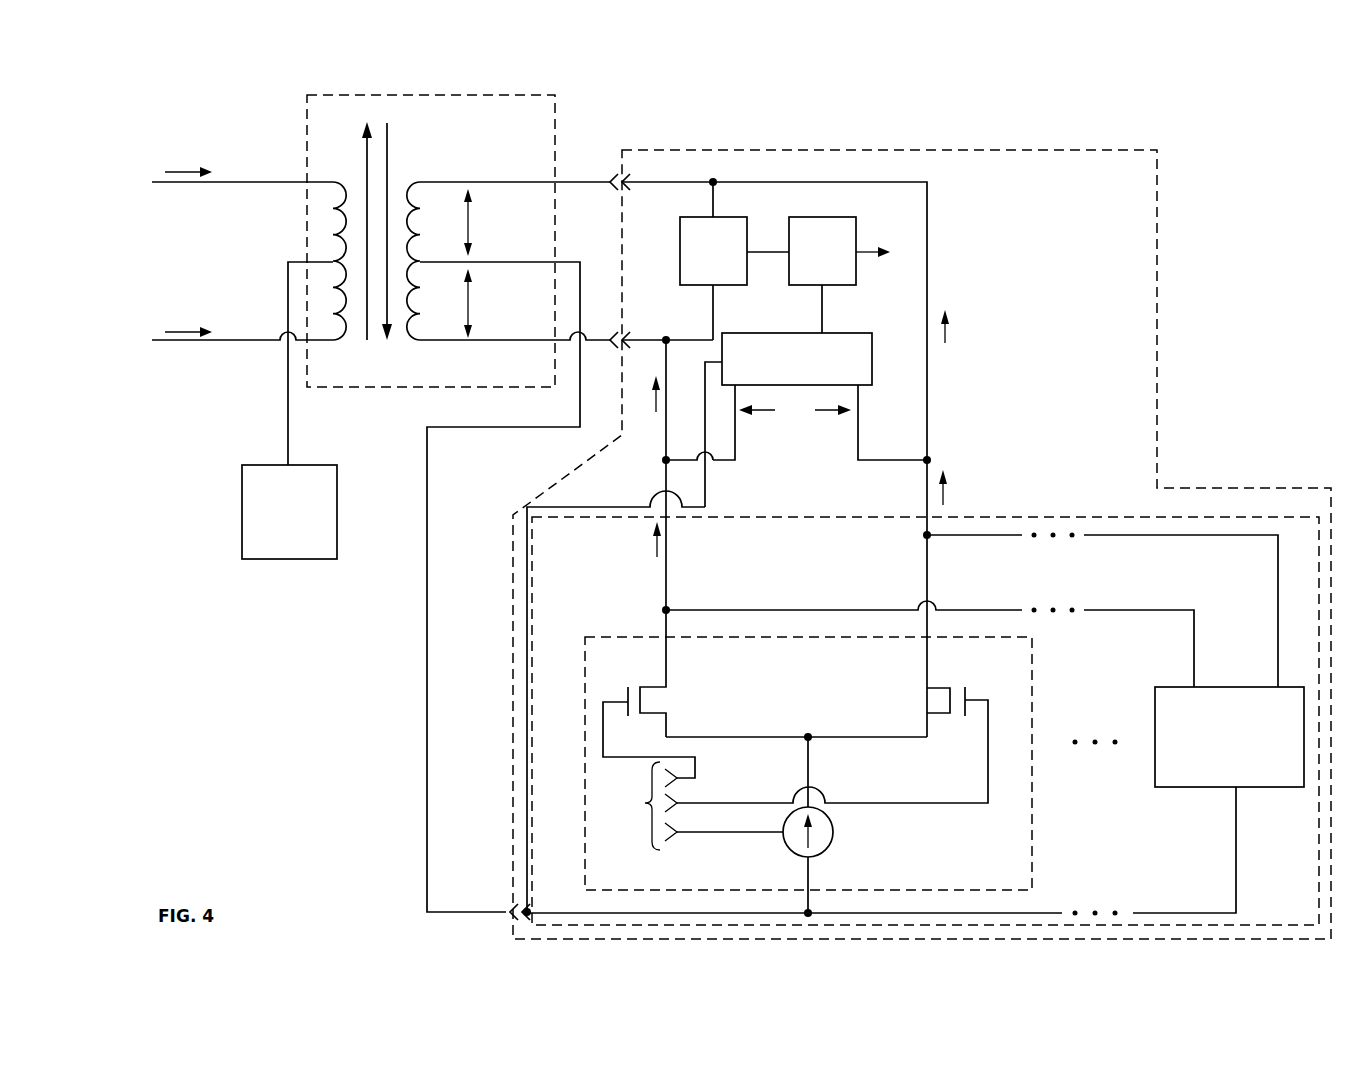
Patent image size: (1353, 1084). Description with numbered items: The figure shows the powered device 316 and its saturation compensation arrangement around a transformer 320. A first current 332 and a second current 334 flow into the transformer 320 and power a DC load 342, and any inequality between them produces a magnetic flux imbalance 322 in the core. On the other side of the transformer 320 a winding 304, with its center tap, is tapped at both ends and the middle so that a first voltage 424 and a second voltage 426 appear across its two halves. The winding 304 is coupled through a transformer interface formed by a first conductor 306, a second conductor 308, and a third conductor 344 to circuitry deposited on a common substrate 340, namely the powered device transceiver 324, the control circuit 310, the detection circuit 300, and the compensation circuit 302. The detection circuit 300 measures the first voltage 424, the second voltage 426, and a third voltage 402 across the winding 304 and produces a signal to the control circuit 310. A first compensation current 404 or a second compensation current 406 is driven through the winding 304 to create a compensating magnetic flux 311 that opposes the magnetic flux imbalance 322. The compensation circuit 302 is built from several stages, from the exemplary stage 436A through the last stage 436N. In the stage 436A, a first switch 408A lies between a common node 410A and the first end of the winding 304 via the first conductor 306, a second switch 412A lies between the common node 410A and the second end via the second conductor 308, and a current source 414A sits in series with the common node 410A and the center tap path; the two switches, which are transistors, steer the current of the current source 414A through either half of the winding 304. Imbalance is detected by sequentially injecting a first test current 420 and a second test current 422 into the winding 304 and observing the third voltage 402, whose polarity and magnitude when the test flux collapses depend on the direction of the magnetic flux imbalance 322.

The powered device 316 is at (1236, 160).
The transformer 320 is at (516, 121).
The first current (I1) 332 is at (170, 160).
The second current (I2) 334 is at (170, 320).
The magnetic flux imbalance 322 is at (368, 334).
The compensating magnetic flux 311 is at (390, 151).
The winding 304 is at (440, 181).
The first voltage (V1) 424 is at (480, 219).
The second voltage (V2) 426 is at (480, 299).
The DC load 342 is at (289, 512).
The common substrate 340 is at (1098, 190).
The first conductor 306 is at (632, 191).
The second conductor 308 is at (630, 333).
The powered device transceiver 324 is at (713, 259).
The control circuit 310 is at (835, 275).
The detection circuit 300 is at (788, 420).
The third voltage (V3) 402 is at (790, 428).
The first compensation current (I3) 404 is at (966, 338).
The second compensation current (I4) 406 is at (670, 473).
The second test current (I6) 422 is at (966, 491).
The compensation circuit 302 is at (543, 540).
The third conductor 344 is at (502, 918).
The first test current (I5) 420 is at (633, 568).
The stage 436A is at (968, 880).
The first switch 408A is at (680, 705).
The second switch 412A is at (951, 689).
The common node 410A is at (811, 731).
The current source 414A is at (836, 842).
The stage 436N is at (1189, 737).